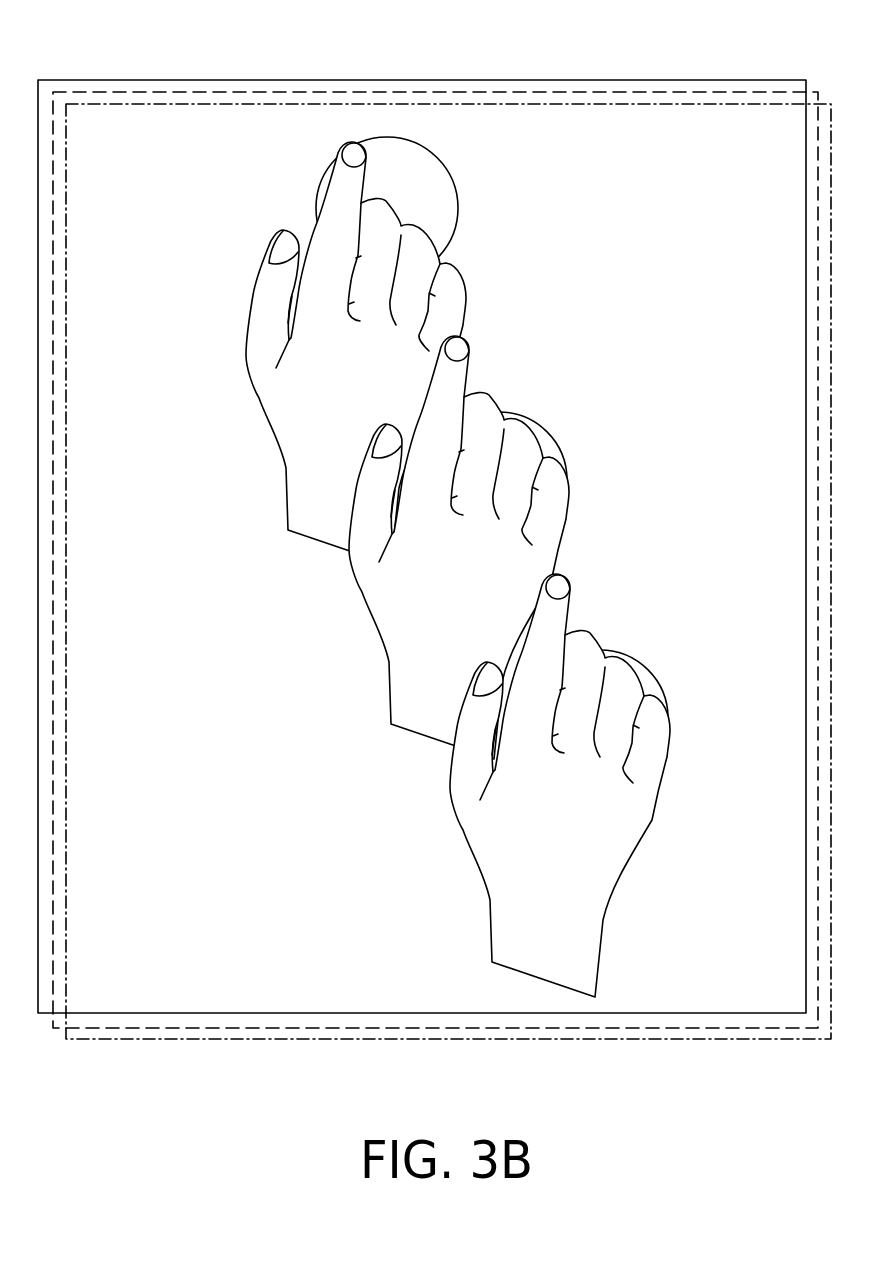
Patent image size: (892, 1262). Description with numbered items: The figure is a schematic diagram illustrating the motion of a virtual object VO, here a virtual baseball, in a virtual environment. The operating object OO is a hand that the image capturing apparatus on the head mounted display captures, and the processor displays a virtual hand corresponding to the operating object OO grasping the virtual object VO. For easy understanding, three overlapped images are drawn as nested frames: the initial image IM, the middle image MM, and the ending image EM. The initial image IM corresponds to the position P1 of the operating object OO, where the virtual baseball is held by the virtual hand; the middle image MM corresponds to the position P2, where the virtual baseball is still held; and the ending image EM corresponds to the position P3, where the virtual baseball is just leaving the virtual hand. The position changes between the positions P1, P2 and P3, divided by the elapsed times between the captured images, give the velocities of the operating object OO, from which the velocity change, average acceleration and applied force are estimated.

The ending image EM is at (98, 80).
The middle image MM is at (175, 92).
The initial image IM is at (255, 105).
The virtual object VO is at (455, 193).
The position P3 is at (226, 347).
The position P2 is at (349, 613).
The position P1 is at (523, 785).
The operating object OO is at (588, 952).